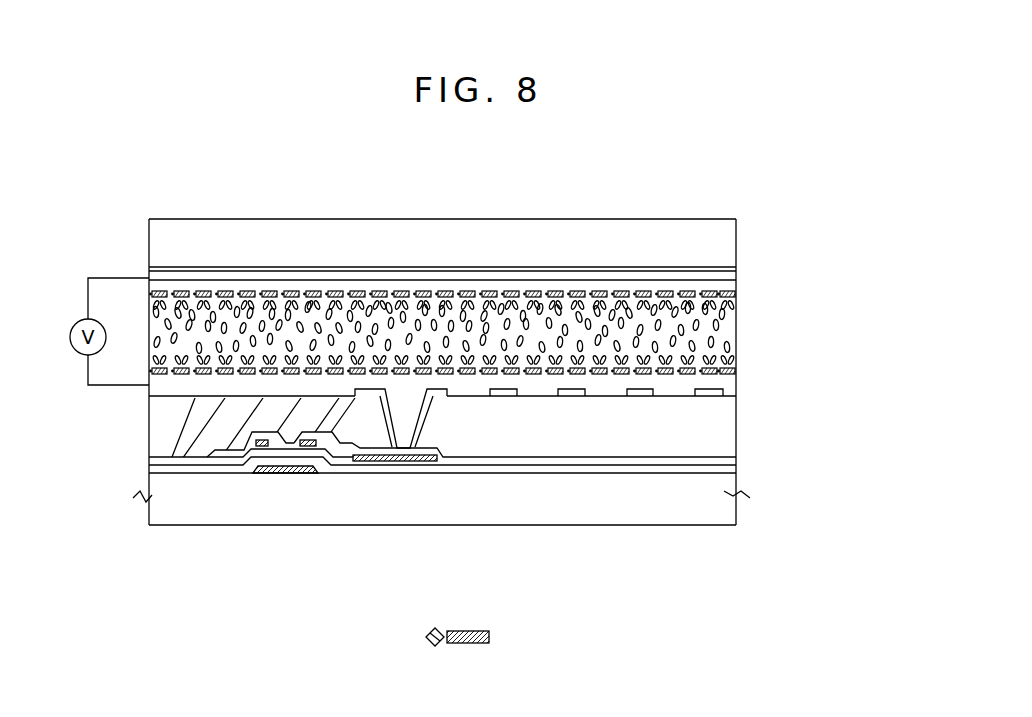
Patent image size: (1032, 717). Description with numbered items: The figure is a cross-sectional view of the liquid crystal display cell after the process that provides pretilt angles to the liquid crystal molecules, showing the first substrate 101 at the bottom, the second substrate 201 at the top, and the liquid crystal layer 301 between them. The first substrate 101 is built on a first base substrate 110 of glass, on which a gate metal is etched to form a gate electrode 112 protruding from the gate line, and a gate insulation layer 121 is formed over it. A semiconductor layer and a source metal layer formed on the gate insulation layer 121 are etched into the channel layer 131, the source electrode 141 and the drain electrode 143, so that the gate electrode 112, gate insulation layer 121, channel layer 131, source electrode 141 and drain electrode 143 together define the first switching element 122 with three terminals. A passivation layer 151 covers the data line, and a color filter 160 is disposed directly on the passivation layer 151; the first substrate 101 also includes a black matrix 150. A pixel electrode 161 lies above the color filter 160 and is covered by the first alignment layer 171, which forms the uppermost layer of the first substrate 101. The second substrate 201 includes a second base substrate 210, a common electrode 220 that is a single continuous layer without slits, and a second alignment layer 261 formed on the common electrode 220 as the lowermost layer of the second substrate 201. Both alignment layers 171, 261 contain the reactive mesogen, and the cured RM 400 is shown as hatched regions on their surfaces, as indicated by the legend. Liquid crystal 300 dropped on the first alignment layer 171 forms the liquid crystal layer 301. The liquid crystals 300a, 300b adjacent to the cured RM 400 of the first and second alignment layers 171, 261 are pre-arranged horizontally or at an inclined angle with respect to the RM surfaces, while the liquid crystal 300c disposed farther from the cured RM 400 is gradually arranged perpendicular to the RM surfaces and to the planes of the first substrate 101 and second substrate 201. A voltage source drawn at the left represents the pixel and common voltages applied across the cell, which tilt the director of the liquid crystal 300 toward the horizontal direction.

The first substrate 101 is at (508, 501).
The first base substrate 110 is at (733, 508).
The gate electrode 112 is at (291, 471).
The gate insulation layer 121 is at (217, 468).
The first switching element 122 is at (442, 528).
The channel layer 131 is at (347, 452).
The source electrode 141 is at (258, 447).
The drain electrode 143 is at (515, 510).
The black matrix 150 is at (183, 452).
The passivation layer 151 is at (612, 398).
The color filter 160 is at (733, 426).
The pixel electrode 161 is at (722, 392).
The first alignment layer 171 is at (660, 378).
The second substrate 201 is at (505, 250).
The second base substrate 210 is at (733, 228).
The common electrode 220 is at (733, 270).
The second alignment layer 261 is at (480, 274).
The liquid crystal 300 is at (735, 330).
The liquid crystal adjacent to the cured RM of the first alignment layer 300a is at (216, 296).
The liquid crystal adjacent to the cured RM of the second alignment layer 300b is at (678, 378).
The liquid crystal disposed farther from the cured RM 300c is at (479, 322).
The liquid crystal layer 301 is at (505, 366).
The cured RM 400 is at (505, 637).